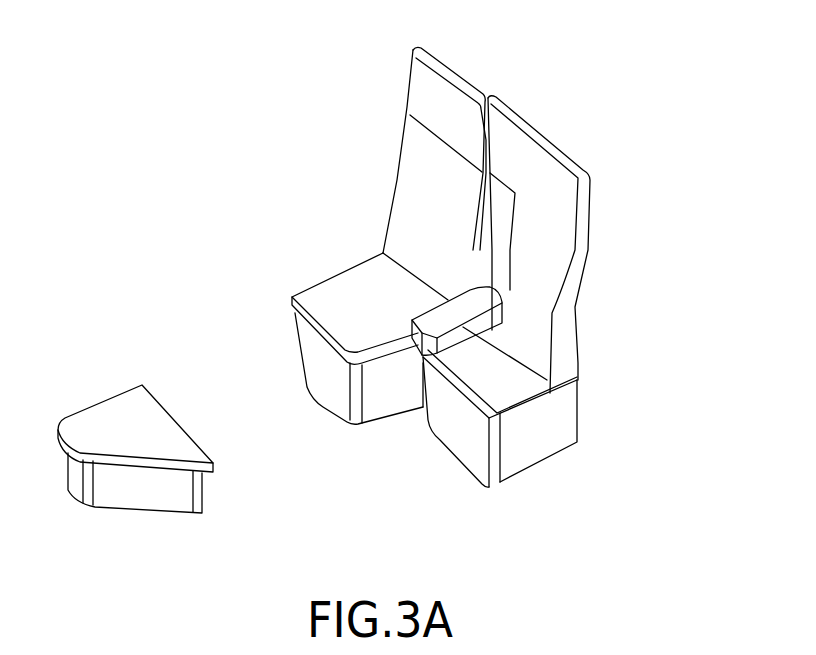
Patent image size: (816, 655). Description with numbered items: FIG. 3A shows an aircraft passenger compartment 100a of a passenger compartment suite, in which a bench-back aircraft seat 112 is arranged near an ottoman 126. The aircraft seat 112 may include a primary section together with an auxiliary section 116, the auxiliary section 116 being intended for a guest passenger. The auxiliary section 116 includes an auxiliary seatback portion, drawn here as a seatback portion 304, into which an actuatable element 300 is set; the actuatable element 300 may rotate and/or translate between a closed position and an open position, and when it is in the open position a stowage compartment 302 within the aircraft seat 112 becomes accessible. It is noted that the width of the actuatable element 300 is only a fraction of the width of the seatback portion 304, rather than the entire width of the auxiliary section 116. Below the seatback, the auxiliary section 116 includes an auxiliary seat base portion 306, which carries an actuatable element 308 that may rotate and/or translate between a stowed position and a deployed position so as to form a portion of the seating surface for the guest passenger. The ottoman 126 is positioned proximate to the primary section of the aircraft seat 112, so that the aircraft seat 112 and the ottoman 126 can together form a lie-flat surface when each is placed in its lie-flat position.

The passenger compartment 100a is at (200, 50).
The aircraft seat 112 is at (342, 210).
The auxiliary section 116 is at (617, 423).
The ottoman 126 is at (115, 412).
The actuatable element 300 is at (462, 308).
The stowage compartment 302 is at (505, 248).
The seatback portion 304 is at (562, 203).
The auxiliary seat base portion 306 is at (542, 445).
The actuatable element 308 is at (458, 427).